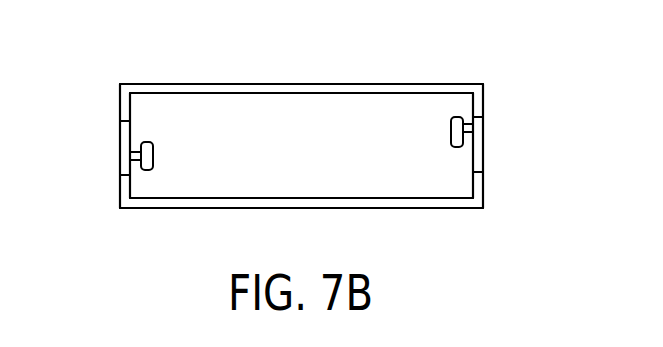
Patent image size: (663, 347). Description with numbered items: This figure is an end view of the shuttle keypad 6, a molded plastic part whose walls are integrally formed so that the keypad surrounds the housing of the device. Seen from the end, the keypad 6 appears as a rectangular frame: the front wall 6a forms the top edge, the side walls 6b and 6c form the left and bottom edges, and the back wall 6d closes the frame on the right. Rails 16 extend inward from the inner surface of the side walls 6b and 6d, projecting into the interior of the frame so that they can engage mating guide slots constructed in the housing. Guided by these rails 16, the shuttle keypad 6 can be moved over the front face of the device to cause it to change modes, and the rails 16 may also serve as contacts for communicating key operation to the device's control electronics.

The shuttle keypad 6 is at (301, 139).
The front wall 6a is at (396, 84).
The side wall 6b is at (120, 129).
The side wall 6c is at (428, 209).
The back wall 6d is at (483, 168).
The rails 16 is at (153, 151).